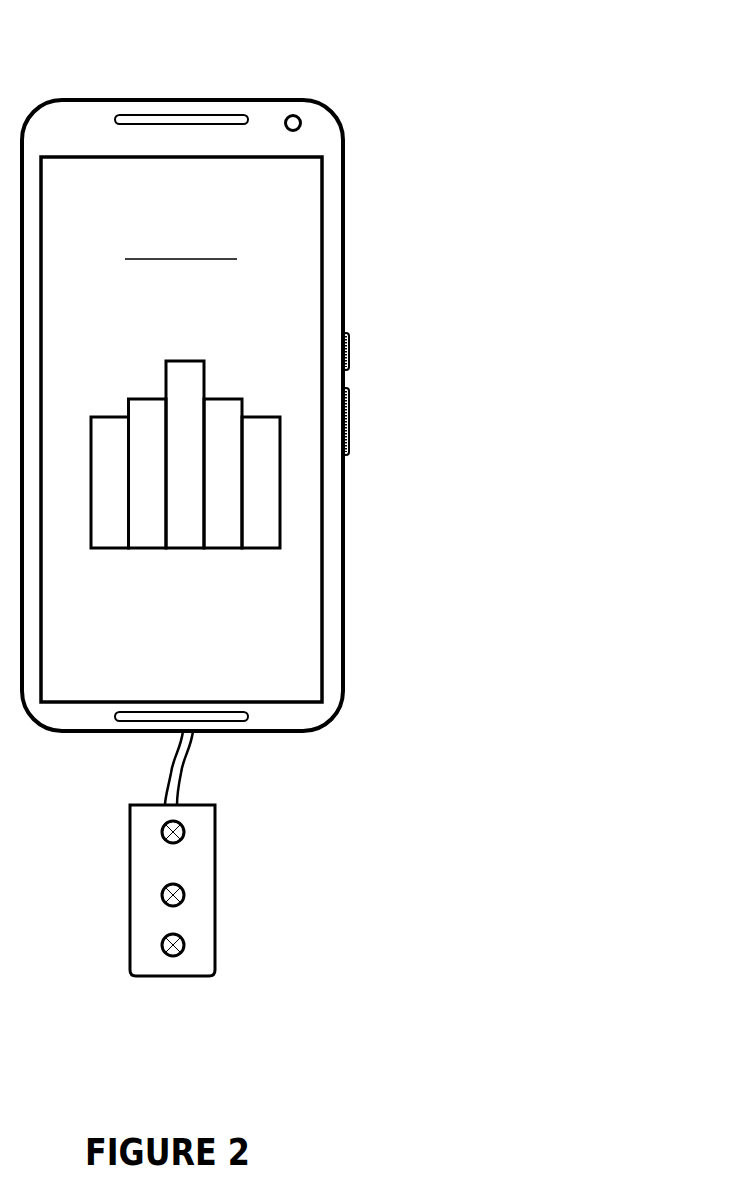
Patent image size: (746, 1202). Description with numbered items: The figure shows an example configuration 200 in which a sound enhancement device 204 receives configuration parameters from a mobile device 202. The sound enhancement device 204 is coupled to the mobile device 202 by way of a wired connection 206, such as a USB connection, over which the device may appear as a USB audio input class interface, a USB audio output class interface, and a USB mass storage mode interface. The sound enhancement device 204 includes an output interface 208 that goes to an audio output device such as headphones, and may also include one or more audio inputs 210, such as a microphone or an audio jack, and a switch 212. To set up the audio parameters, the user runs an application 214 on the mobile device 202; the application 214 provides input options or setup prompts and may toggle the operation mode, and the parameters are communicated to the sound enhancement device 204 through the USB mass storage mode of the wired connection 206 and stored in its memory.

The configuration 200 is at (391, 62).
The mobile device 202 is at (212, 100).
The sound enhancement device 204 is at (215, 845).
The wired connection 206 is at (191, 766).
The output interface 208 is at (162, 948).
The audio inputs 210 is at (162, 836).
The switch 212 is at (162, 898).
The application 214 is at (316, 560).